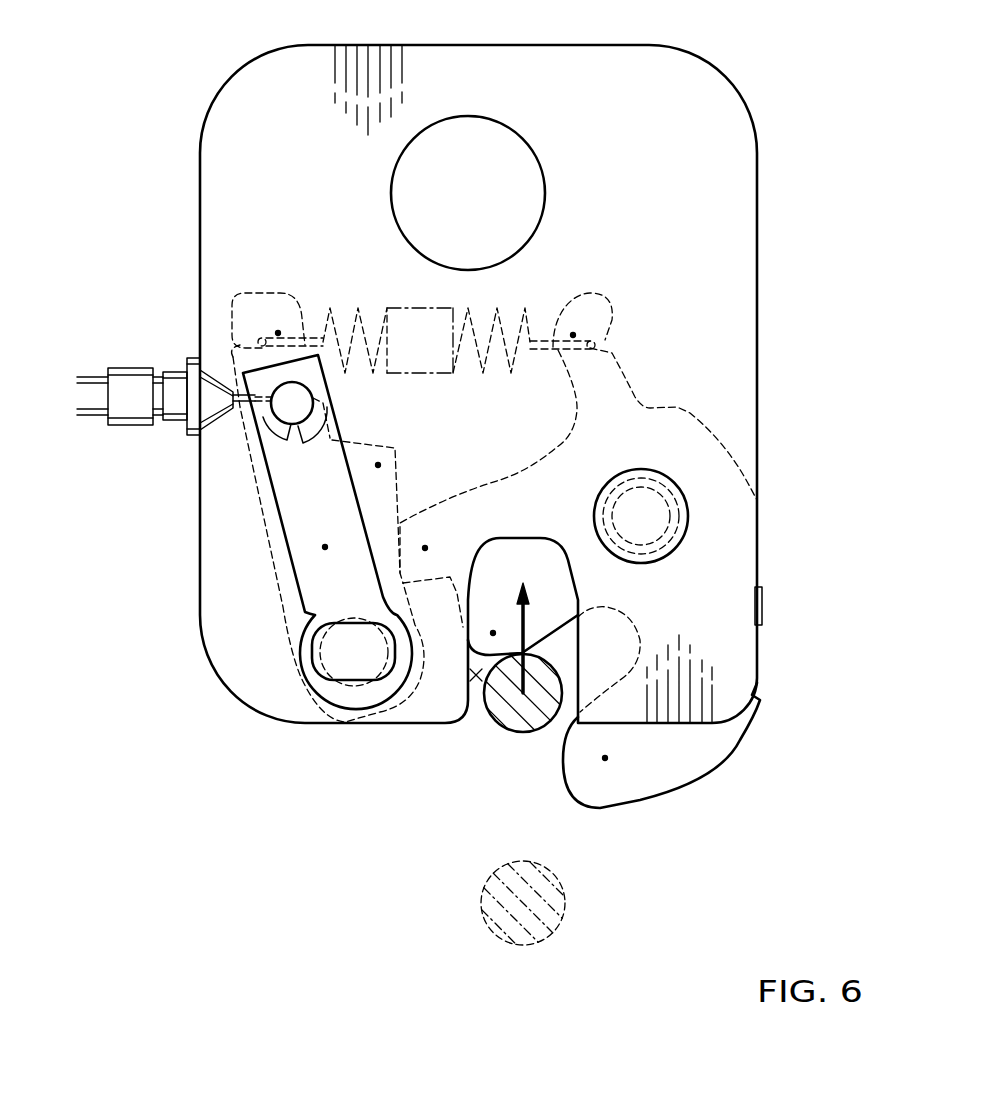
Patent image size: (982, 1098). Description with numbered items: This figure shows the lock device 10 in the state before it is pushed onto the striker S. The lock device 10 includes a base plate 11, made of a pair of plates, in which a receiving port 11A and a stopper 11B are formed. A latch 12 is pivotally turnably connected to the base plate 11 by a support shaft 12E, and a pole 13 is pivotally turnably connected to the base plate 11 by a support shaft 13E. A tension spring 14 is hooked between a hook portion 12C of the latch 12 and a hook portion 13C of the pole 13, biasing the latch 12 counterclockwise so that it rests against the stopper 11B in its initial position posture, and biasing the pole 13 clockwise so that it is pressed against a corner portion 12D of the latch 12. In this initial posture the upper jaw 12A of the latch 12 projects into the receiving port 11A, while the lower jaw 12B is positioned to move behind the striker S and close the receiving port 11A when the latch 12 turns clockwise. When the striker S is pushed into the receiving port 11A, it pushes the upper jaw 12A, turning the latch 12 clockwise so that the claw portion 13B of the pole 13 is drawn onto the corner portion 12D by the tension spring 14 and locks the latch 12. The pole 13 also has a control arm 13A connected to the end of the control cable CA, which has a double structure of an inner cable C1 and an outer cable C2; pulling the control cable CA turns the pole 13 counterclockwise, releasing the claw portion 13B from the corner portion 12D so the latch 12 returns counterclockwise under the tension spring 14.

The lock device 10 is at (127, 103).
The base plate 11 is at (705, 233).
The receiving port 11A is at (478, 680).
The stopper 11B is at (762, 600).
The latch 12 is at (647, 430).
The upper jaw 12A is at (493, 633).
The lower jaw 12B is at (605, 758).
The hook portion 12C is at (573, 335).
The corner portion 12D is at (425, 548).
The support shaft 12E is at (642, 517).
The pole 13 is at (262, 498).
The control arm 13A is at (325, 547).
The claw portion 13B is at (378, 465).
The hook portion 13C is at (278, 333).
The support shaft 13E is at (355, 660).
The tension spring 14 is at (410, 332).
The striker S is at (507, 718).
The control cable CA is at (132, 372).
The inner cable C1 is at (255, 397).
The outer cable C2 is at (93, 383).